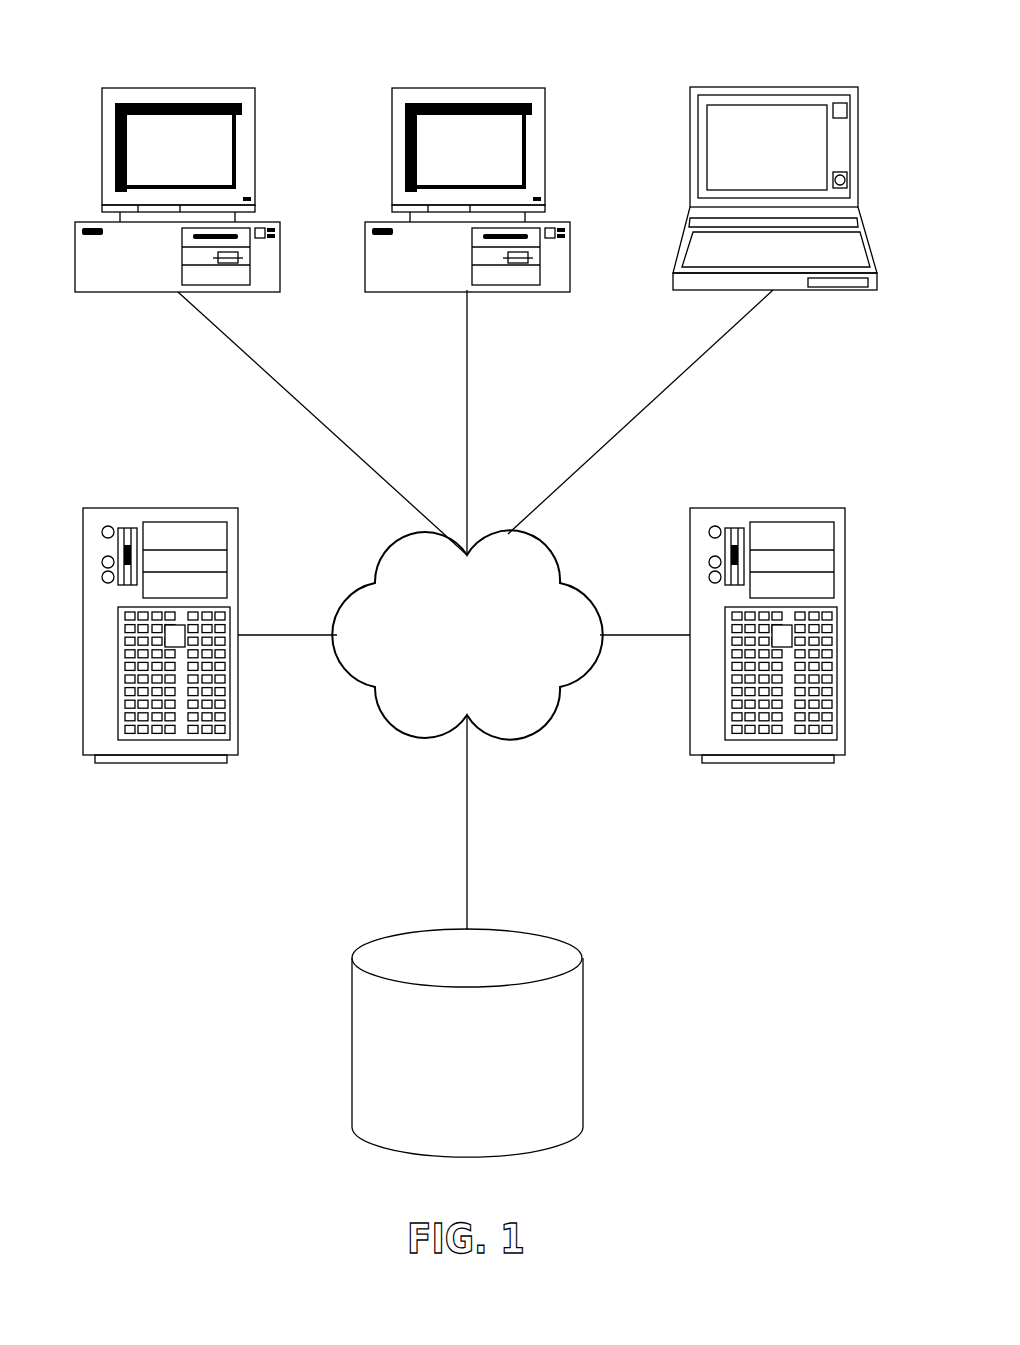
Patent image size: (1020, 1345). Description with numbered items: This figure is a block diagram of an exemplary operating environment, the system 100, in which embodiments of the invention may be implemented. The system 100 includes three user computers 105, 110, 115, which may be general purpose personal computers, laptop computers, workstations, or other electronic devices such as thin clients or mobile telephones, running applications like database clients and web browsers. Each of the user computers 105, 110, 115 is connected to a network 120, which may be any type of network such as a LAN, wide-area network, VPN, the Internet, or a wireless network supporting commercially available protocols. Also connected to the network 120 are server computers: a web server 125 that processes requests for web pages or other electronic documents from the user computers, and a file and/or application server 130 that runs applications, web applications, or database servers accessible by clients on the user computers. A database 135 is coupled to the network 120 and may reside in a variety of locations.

The system 100 is at (266, 880).
The user computer 105 is at (258, 292).
The user computer 110 is at (545, 290).
The user computer 115 is at (823, 290).
The network 120 is at (544, 701).
The web server 125 is at (213, 763).
The file and/or application server 130 is at (823, 763).
The database 135 is at (559, 1131).